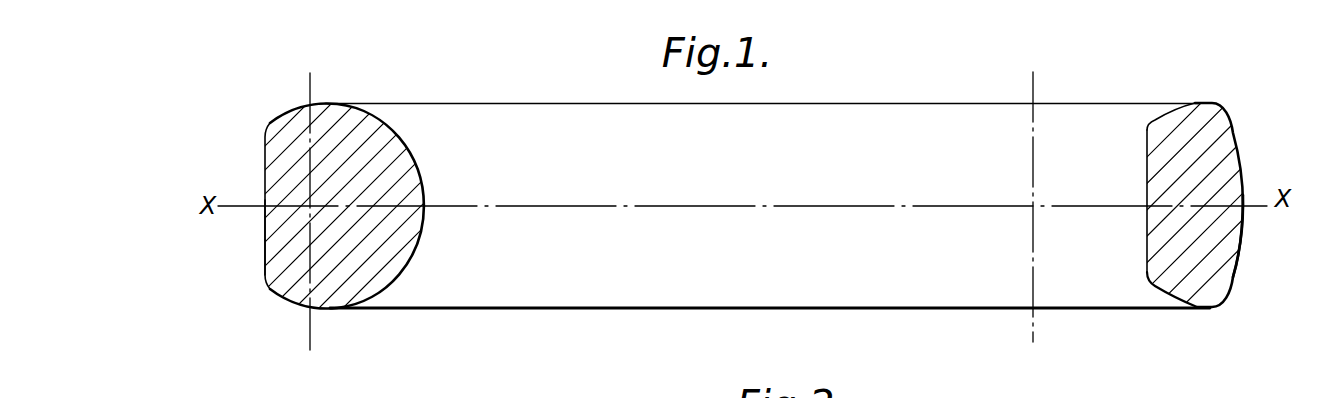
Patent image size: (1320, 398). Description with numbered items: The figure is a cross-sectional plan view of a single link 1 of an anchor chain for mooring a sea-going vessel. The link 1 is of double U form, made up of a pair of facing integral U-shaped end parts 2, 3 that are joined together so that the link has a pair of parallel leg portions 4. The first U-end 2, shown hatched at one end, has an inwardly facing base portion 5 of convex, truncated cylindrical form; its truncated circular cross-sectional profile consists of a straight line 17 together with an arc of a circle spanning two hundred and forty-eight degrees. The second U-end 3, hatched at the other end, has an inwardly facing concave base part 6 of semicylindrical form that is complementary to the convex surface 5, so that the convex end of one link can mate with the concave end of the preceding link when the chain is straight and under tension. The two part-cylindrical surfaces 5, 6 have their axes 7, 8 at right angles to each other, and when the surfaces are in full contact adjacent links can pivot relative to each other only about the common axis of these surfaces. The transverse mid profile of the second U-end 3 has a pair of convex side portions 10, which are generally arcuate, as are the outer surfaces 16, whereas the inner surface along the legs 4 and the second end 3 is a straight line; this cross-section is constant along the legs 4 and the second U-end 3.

The link 1 is at (793, 310).
The first U-shaped end part 2 is at (283, 150).
The second U-shaped end part 3 is at (1208, 268).
The parallel leg portions 4 is at (582, 293).
The convex base portion 5 is at (425, 193).
The concave base part 6 is at (1147, 237).
The axis of convex surface 7 is at (263, 263).
The axis of concave surface 8 is at (1034, 208).
The convex side portions 10 is at (1163, 122).
The outer surfaces 16 is at (1244, 220).
The flat end face 17 is at (264, 238).